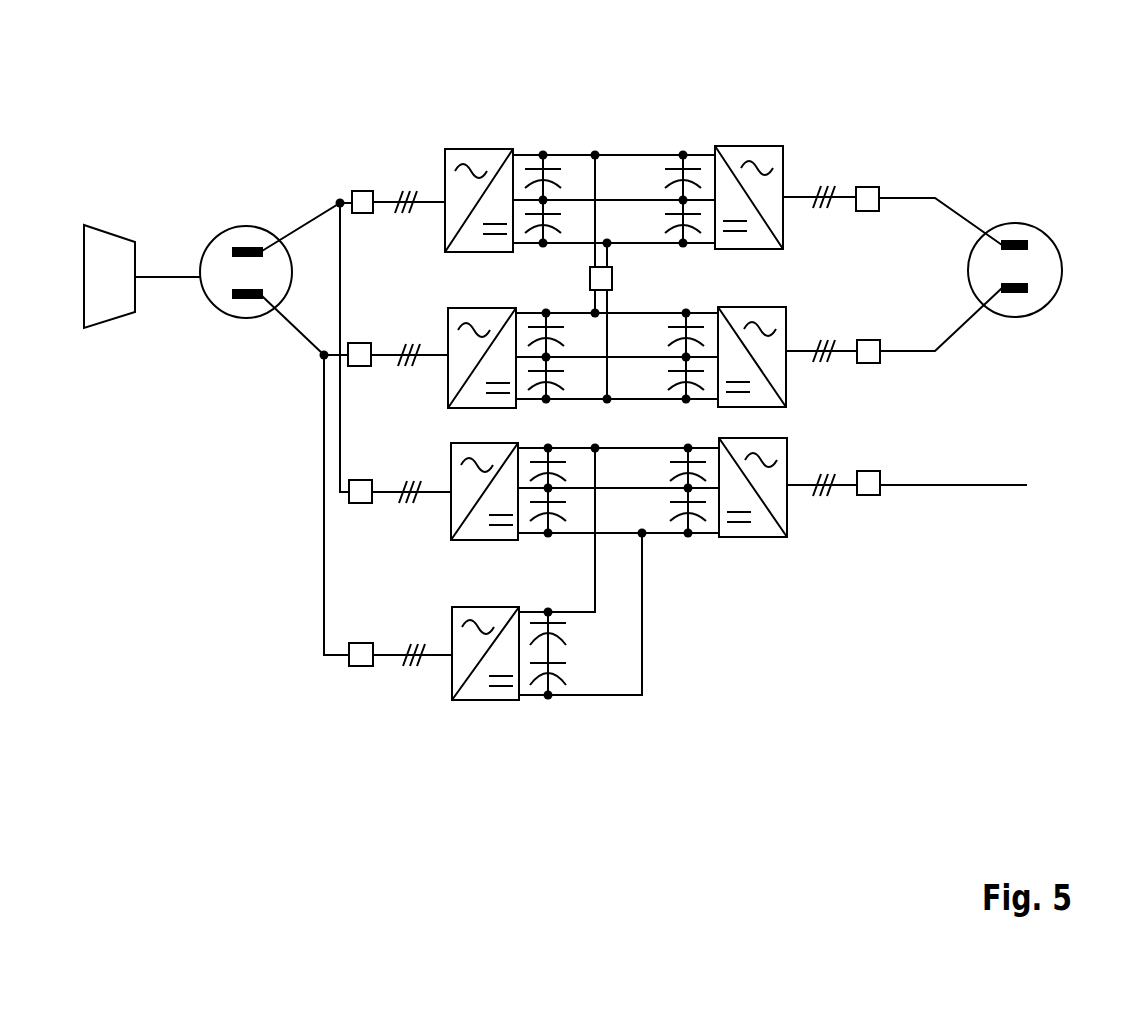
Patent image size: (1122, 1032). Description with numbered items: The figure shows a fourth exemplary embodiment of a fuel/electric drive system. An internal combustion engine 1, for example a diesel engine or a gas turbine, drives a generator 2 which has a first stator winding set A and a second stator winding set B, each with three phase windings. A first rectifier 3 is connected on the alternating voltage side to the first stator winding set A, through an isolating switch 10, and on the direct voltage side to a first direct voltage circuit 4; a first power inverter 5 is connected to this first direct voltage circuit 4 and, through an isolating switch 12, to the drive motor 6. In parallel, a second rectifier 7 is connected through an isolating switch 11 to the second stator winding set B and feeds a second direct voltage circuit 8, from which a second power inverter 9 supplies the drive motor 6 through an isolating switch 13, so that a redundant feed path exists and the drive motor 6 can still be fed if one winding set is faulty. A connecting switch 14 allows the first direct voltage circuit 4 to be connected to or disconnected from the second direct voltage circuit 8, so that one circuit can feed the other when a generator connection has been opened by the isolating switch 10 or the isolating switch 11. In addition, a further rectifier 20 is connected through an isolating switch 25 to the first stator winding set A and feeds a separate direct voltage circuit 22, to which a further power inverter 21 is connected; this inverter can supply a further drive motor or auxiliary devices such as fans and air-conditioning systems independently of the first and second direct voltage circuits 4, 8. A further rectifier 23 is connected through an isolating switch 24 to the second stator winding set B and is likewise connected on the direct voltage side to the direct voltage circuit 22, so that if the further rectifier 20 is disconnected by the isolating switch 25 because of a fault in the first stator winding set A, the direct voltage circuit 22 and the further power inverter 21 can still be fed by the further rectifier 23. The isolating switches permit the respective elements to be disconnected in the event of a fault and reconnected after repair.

The internal combustion engine 1 is at (103, 228).
The generator 2 is at (230, 234).
The first stator winding set A is at (239, 248).
The second stator winding set B is at (238, 300).
The isolating switch 10 is at (357, 191).
The isolating switch 11 is at (358, 366).
The isolating switch 25 is at (357, 503).
The isolating switch 24 is at (360, 666).
The first rectifier 3 is at (462, 149).
The second rectifier 7 is at (462, 408).
The further rectifier 20 is at (487, 540).
The further rectifier 23 is at (477, 700).
The first direct voltage circuit 4 is at (624, 146).
The connecting switch 14 is at (591, 267).
The first power inverter 5 is at (760, 146).
The second power inverter 9 is at (780, 407).
The further power inverter 21 is at (760, 537).
The second direct voltage circuit 8 is at (632, 417).
The direct voltage circuit 22 is at (582, 722).
The isolating switch 12 is at (866, 187).
The isolating switch 13 is at (877, 363).
The drive motor 6 is at (1033, 226).